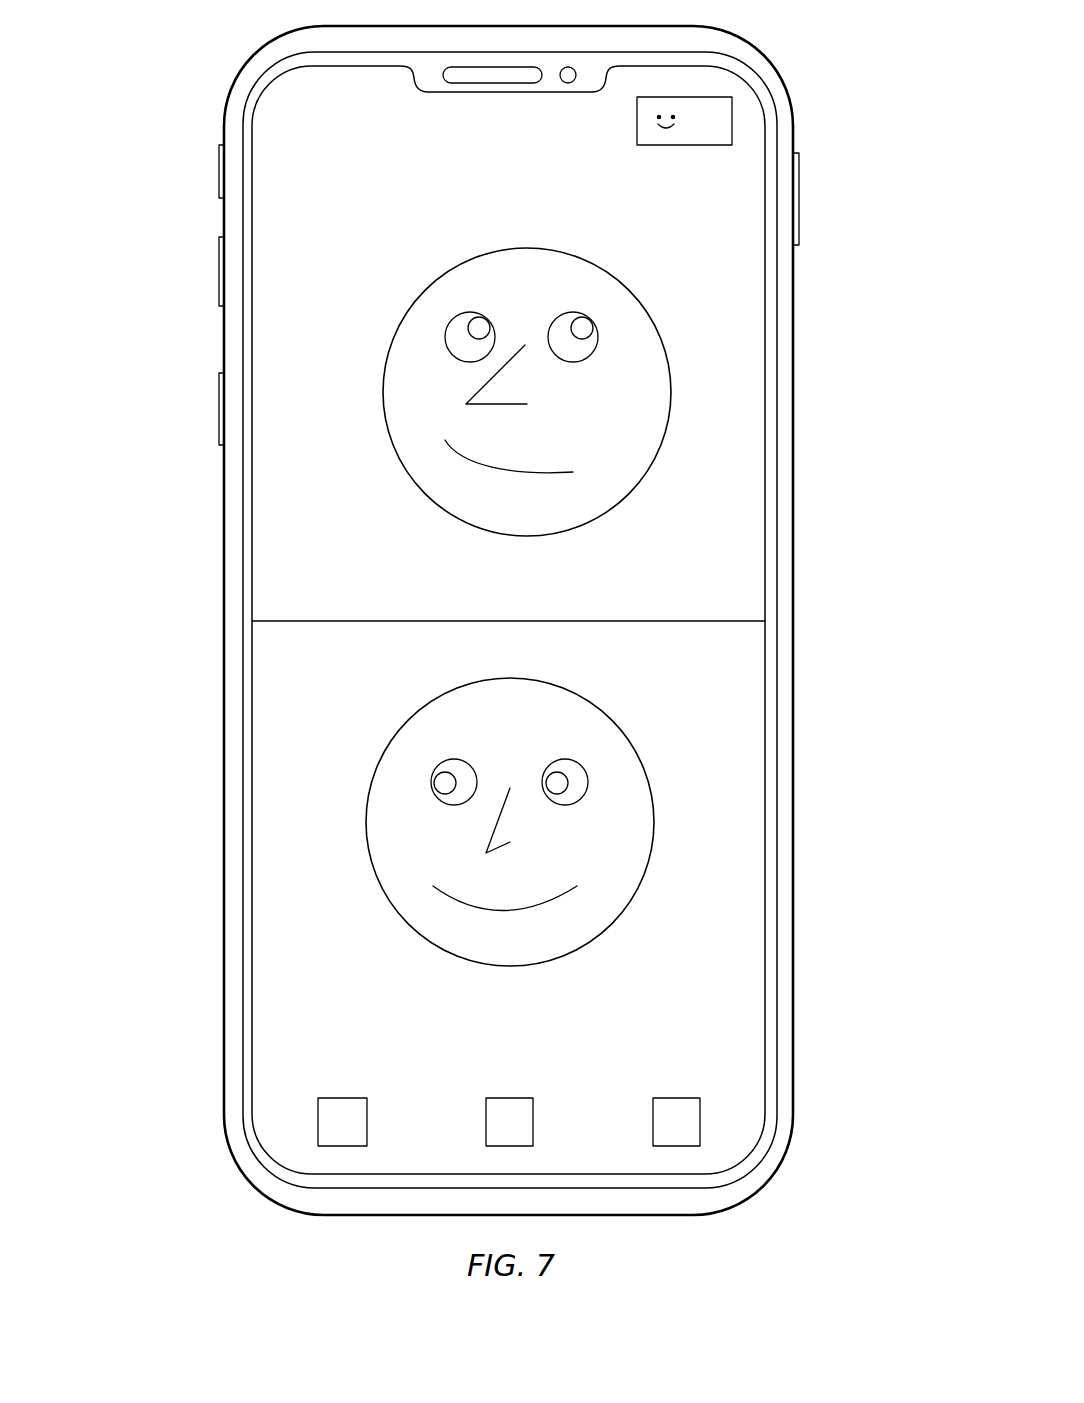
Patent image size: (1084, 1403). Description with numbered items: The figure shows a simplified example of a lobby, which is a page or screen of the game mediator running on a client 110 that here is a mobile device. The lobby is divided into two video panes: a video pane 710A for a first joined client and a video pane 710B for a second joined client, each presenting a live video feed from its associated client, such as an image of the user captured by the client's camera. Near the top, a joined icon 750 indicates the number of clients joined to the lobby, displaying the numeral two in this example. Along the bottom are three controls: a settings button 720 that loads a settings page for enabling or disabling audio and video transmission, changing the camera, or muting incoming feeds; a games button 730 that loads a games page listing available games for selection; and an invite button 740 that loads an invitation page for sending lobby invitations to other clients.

The client 110 is at (224, 518).
The video pane 710A is at (490, 413).
The video pane 710B is at (465, 802).
The settings button 720 is at (327, 1132).
The games button 730 is at (548, 1052).
The invite button 740 is at (683, 1108).
The joined icon 750 is at (647, 122).